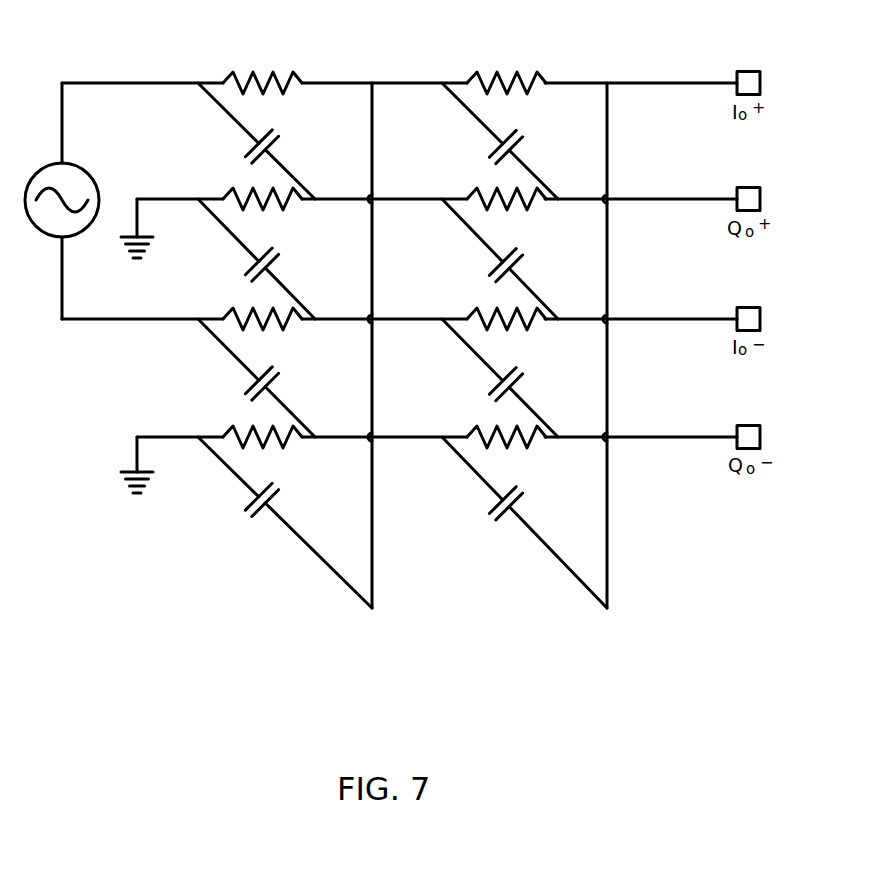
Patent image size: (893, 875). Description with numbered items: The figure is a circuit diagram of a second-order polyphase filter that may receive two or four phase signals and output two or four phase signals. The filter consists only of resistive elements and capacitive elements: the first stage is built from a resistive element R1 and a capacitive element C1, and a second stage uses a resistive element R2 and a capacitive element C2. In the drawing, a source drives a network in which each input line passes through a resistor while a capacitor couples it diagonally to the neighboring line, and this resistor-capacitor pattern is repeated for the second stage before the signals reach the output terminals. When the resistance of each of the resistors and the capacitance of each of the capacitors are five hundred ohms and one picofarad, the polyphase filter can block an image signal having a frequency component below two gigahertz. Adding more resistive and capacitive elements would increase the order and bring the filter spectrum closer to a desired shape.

The resistive element R1 is at (262, 71).
The resistive element R2 is at (506, 71).
The capacitive element C1 is at (256, 141).
The capacitive element C2 is at (500, 141).